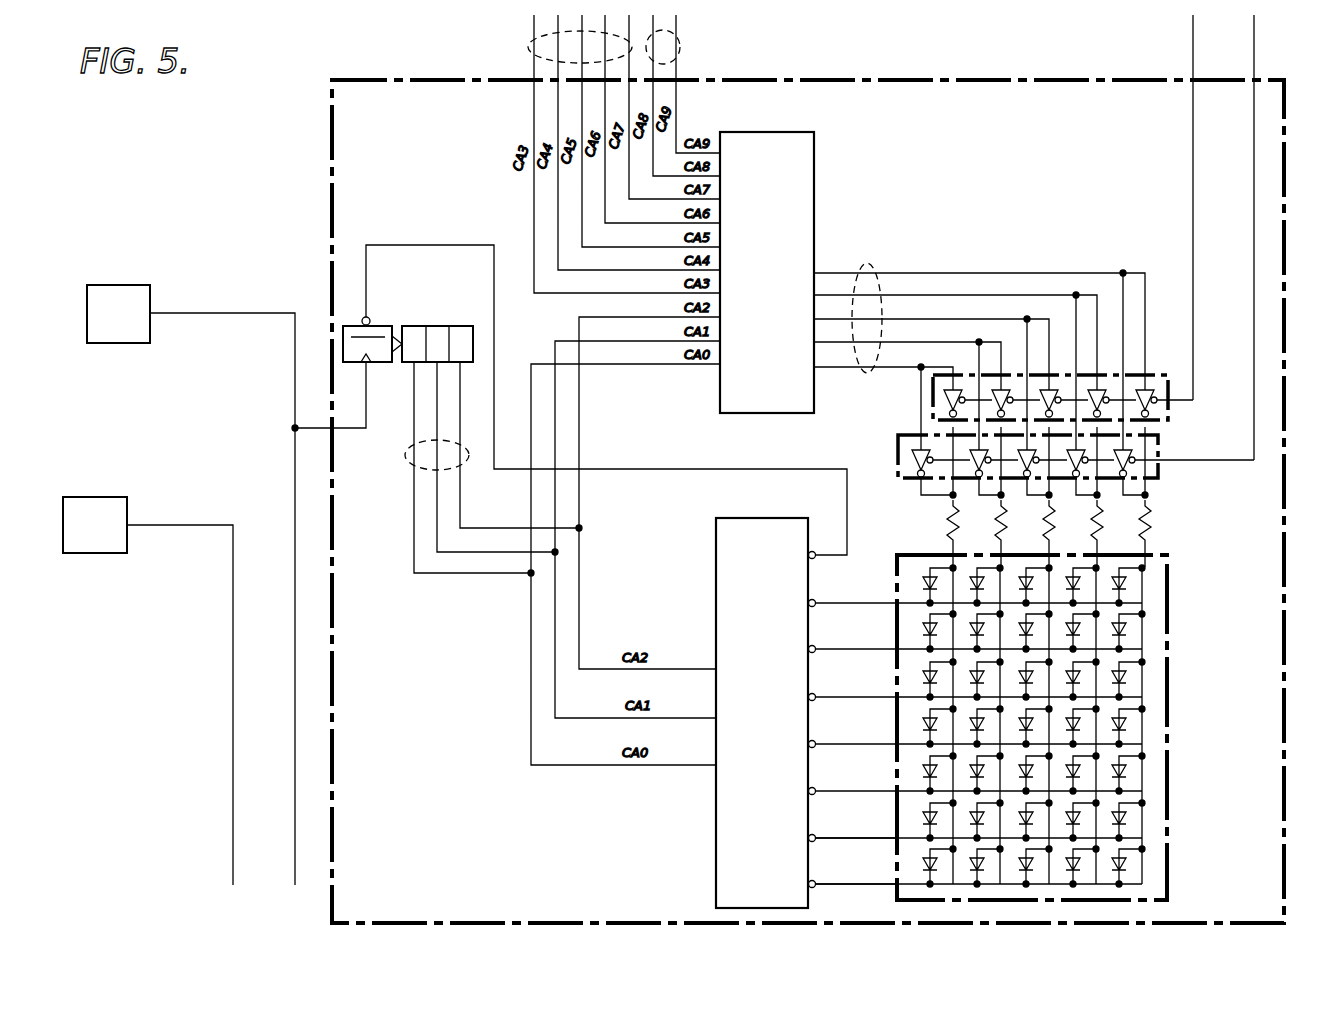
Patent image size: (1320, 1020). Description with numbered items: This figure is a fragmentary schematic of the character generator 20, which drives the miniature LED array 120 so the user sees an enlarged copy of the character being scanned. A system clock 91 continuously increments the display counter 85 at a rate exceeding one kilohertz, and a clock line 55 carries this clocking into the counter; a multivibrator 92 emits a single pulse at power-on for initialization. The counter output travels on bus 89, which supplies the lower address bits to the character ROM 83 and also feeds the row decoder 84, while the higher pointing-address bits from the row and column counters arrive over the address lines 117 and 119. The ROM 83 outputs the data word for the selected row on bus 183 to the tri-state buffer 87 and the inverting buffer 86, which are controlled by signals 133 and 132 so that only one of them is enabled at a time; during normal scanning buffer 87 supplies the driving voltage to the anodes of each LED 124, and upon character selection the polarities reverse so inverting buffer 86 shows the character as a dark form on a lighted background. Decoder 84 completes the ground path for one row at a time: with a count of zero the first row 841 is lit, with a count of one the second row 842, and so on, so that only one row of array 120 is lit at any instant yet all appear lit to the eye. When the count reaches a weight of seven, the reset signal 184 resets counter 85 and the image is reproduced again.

The character generator 20 is at (332, 176).
The clock line 55 is at (305, 428).
The character ROM 83 is at (814, 142).
The row decoder 84 is at (716, 590).
The display counter 85 is at (437, 326).
The inverting buffer 86 is at (1172, 375).
The tri-state buffer 87 is at (1158, 480).
The bus 89 is at (405, 462).
The system clock 91 is at (150, 285).
The multivibrator 92 is at (127, 497).
The address lines 117 is at (528, 47).
The address line 119 is at (680, 47).
The LED array 120 is at (1168, 597).
The LED 124 is at (1125, 583).
The control signal 132 is at (1193, 50).
The control signal 133 is at (1254, 52).
The bus 183 is at (876, 263).
The reset signal 184 is at (606, 400).
The first row 841 is at (882, 888).
The second row 842 is at (886, 842).